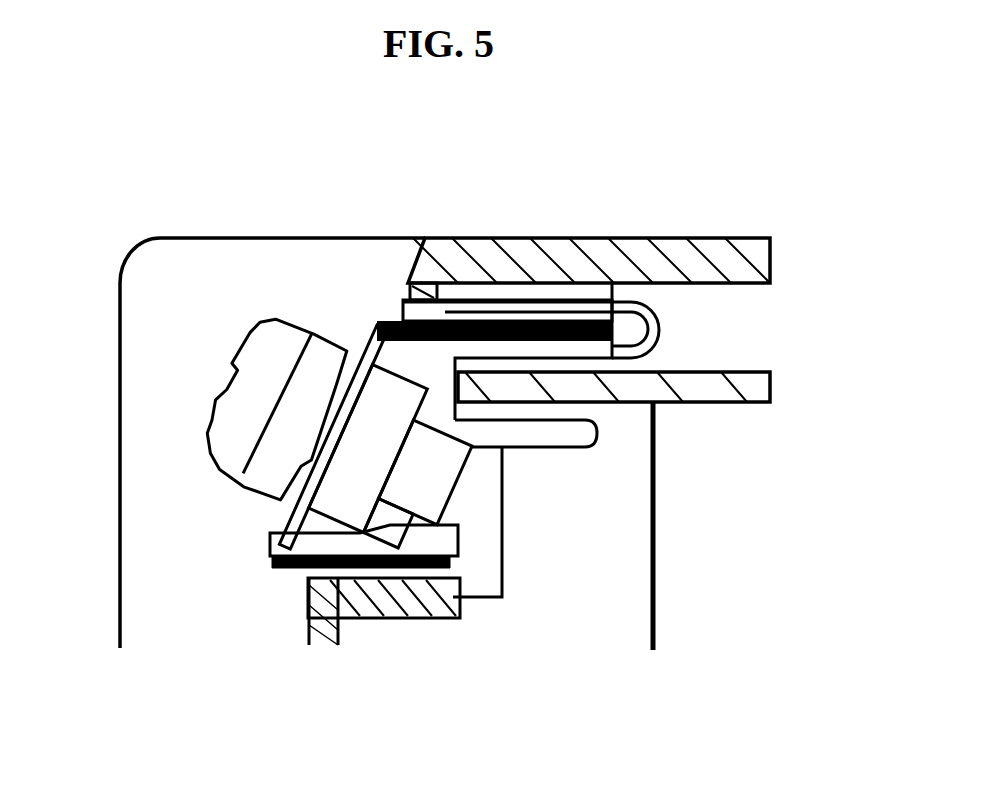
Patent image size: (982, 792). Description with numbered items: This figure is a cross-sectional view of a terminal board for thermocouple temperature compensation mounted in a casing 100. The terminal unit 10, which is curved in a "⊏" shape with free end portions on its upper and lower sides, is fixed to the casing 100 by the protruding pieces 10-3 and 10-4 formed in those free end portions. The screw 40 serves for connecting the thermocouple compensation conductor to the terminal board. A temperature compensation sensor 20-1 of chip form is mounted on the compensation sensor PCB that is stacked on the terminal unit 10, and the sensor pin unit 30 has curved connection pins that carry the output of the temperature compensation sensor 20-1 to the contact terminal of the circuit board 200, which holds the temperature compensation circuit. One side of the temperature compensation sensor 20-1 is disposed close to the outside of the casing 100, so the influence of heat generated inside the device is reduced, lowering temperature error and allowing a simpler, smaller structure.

The casing 100 is at (648, 240).
The terminal unit 10 is at (656, 348).
The protruding piece 10-3 is at (450, 300).
The protruding piece 10-4 is at (422, 618).
The temperature compensation sensor 20-1 is at (415, 302).
The sensor pin unit 30 is at (656, 300).
The screw 40 is at (216, 426).
The circuit board 200 is at (760, 402).